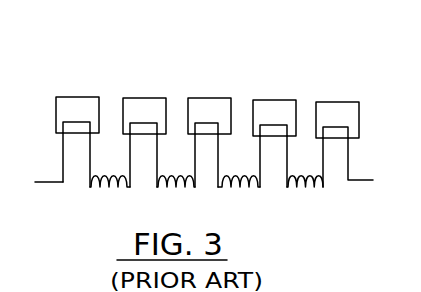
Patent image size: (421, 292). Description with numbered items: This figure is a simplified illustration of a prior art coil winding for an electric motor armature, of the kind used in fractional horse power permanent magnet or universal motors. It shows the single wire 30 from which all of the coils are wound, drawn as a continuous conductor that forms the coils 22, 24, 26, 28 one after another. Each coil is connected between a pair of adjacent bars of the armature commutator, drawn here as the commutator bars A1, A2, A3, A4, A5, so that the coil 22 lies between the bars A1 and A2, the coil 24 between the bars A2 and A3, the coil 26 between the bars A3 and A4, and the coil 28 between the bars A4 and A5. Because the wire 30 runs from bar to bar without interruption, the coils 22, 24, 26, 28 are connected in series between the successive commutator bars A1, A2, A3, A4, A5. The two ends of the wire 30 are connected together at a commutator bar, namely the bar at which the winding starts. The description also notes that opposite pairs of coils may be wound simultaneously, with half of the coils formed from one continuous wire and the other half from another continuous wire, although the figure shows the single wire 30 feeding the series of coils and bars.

The commutator bar A1 is at (78, 107).
The commutator bar A2 is at (143, 107).
The commutator bar A3 is at (207, 107).
The commutator bar A4 is at (273, 107).
The commutator bar A5 is at (333, 108).
The coil 22 is at (127, 210).
The coil 24 is at (187, 198).
The coil 26 is at (257, 208).
The coil 28 is at (323, 208).
The single wire 30 is at (52, 182).